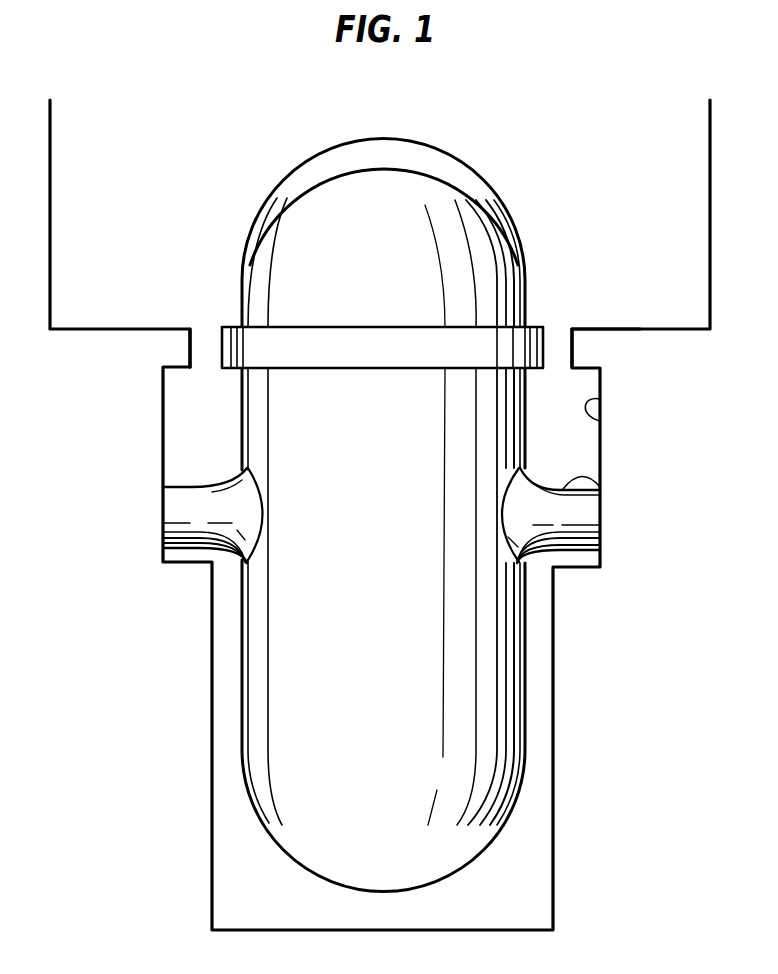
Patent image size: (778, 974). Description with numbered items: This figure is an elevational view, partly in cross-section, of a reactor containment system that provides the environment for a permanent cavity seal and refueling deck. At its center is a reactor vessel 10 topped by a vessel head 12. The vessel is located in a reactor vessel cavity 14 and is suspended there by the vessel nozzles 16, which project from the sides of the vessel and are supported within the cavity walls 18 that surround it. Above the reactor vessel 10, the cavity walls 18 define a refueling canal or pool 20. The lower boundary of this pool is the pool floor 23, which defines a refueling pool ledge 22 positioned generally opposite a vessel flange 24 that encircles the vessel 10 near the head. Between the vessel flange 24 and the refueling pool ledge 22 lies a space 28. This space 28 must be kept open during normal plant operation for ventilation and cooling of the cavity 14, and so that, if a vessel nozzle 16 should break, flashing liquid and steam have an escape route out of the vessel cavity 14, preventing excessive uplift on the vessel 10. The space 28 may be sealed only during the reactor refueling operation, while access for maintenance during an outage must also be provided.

The reactor vessel 10 is at (240, 692).
The vessel head 12 is at (478, 172).
The reactor vessel cavity 14 is at (220, 443).
The vessel nozzle 16 is at (600, 482).
The cavity wall 18 is at (600, 425).
The refueling canal or pool 20 is at (188, 161).
The refueling pool ledge 22 is at (570, 328).
The pool floor 23 is at (620, 334).
The vessel flange 24 is at (538, 328).
The space 28 is at (201, 343).